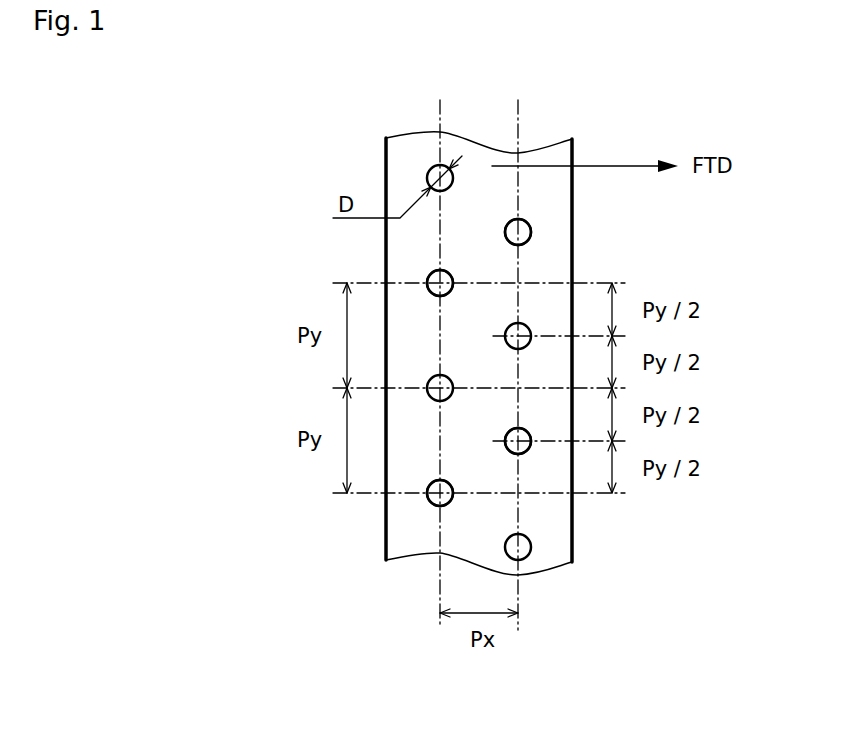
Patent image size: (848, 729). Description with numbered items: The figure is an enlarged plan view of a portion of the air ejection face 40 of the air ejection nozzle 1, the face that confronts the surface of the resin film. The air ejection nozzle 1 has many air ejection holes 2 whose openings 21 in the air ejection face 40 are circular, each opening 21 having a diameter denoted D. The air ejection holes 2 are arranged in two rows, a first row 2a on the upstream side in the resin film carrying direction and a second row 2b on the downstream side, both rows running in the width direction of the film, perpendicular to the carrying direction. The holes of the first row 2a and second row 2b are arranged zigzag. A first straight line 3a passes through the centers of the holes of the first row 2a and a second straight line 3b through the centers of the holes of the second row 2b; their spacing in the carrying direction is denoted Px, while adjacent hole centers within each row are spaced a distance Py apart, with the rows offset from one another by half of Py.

The air ejection nozzle 1 is at (350, 146).
The air ejection holes 2 is at (428, 271).
The first row 2a is at (438, 536).
The second row 2b is at (520, 510).
The first air ejection holes-aligned straight line 3a is at (440, 110).
The second air ejection holes-aligned straight line 3b is at (519, 100).
The openings 21 is at (428, 507).
The air ejection face 40 is at (545, 262).